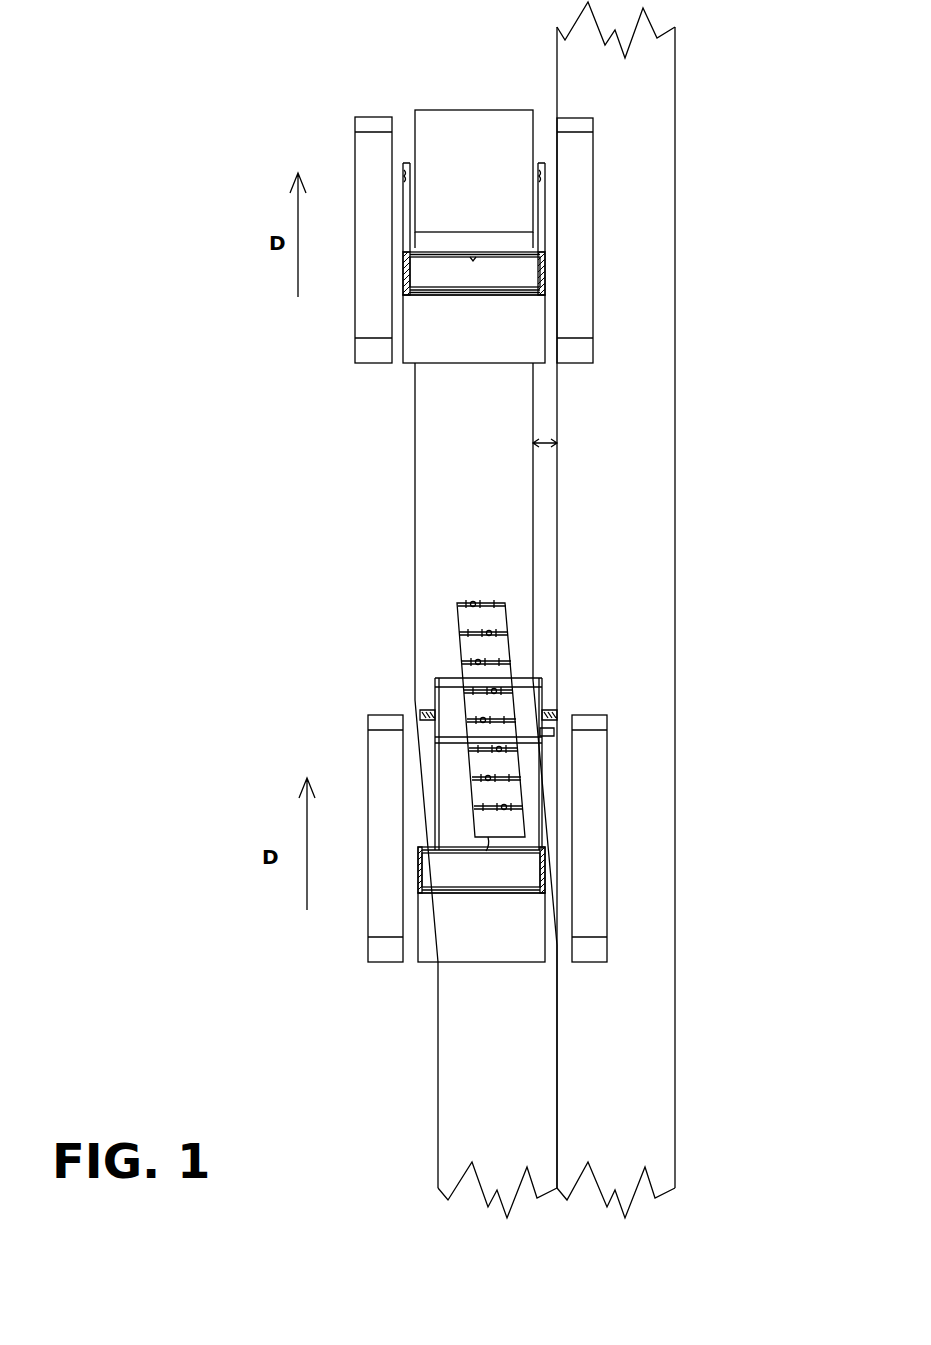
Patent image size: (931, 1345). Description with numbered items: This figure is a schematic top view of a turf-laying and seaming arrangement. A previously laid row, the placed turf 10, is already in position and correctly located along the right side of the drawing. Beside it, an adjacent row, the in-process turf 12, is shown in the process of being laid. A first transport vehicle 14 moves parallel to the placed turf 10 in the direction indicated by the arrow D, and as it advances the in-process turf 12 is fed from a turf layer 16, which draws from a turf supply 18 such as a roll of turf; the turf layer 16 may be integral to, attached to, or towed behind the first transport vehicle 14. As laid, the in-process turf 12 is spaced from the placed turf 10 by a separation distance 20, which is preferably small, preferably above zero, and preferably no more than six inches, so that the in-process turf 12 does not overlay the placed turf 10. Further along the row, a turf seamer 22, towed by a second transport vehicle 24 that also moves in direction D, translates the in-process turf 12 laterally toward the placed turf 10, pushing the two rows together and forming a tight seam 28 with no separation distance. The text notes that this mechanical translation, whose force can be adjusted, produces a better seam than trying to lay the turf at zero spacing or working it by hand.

The placed turf 10 is at (620, 563).
The in-process turf 12 is at (472, 1053).
The first transport vehicle 14 is at (477, 328).
The turf layer 16 is at (432, 272).
The turf supply 18 is at (477, 157).
The separation distance 20 is at (545, 443).
The turf seamer 22 is at (457, 642).
The second transport vehicle 24 is at (493, 925).
The tight seam 28 is at (557, 1078).